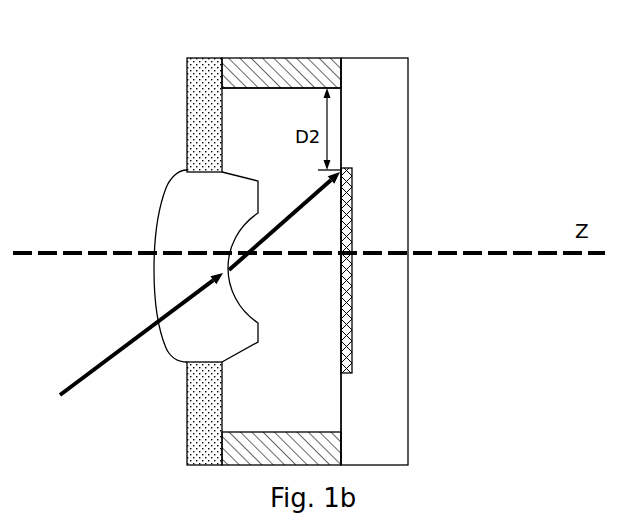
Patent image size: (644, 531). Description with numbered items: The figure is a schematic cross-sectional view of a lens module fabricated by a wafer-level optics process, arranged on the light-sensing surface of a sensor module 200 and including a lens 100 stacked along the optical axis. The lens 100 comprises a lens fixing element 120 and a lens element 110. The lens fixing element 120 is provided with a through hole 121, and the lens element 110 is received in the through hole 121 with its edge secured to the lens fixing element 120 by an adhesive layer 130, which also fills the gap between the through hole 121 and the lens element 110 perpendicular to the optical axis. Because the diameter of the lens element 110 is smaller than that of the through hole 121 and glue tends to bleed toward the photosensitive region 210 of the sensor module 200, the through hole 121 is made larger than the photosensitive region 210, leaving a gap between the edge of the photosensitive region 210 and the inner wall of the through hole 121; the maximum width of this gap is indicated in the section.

The lens 100 is at (96, 64).
The lens element 110 is at (190, 192).
The lens fixing element 120 is at (235, 70).
The through hole 121 is at (275, 103).
The adhesive layer 130 is at (190, 122).
The sensor module 200 is at (373, 72).
The photosensitive region 210 is at (352, 168).